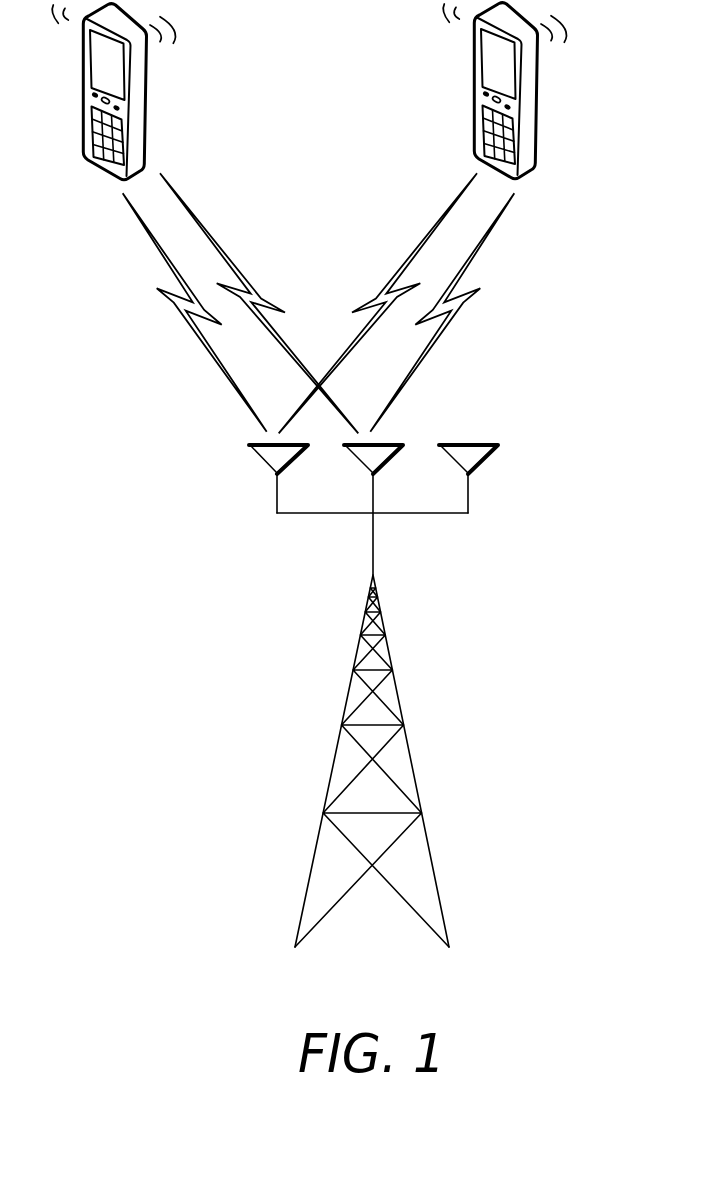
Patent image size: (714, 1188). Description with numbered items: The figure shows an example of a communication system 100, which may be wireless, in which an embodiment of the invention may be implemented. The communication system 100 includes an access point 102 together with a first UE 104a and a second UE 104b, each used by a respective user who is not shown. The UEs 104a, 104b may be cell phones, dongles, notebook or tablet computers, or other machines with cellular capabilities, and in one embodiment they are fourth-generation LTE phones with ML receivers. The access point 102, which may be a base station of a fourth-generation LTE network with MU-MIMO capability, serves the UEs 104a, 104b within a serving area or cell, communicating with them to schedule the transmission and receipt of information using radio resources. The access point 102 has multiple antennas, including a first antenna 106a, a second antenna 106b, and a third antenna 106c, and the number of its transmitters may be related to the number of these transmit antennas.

The communication system 100 is at (140, 373).
The access point 102 is at (428, 767).
The first UE 104a is at (150, 100).
The second UE 104b is at (543, 123).
The first antenna 106a is at (267, 461).
The second antenna 106b is at (384, 461).
The third antenna 106c is at (479, 461).